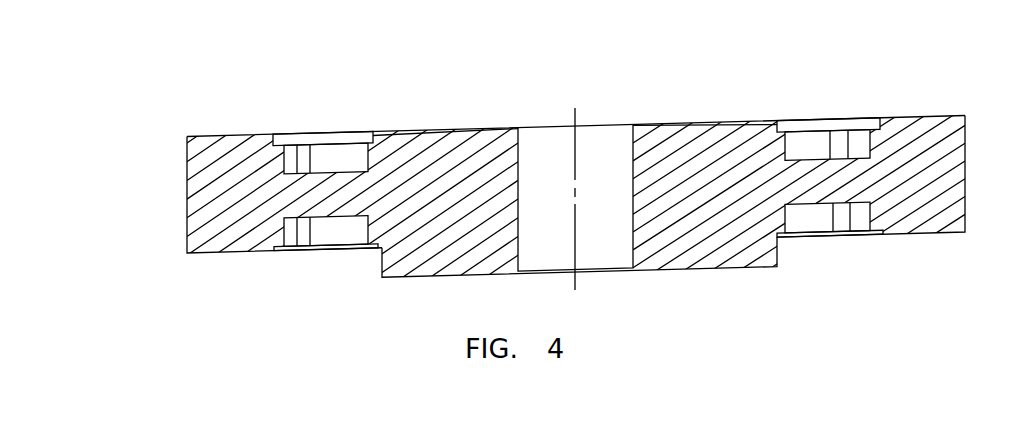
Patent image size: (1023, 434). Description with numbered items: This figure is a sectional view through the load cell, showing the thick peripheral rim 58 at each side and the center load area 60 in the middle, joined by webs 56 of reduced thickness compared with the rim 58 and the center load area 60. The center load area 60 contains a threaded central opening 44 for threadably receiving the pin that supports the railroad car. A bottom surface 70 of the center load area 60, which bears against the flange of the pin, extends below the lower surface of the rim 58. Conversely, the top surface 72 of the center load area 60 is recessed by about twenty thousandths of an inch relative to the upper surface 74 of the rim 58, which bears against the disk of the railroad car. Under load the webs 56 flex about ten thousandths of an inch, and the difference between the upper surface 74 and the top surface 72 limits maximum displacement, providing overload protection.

The threaded central opening 44 is at (633, 142).
The webs 56 is at (327, 173).
The rim 58 is at (906, 117).
The center load area 60 is at (420, 132).
The bottom surface 70 is at (748, 267).
The top surface 72 is at (691, 128).
The upper surface 74 is at (214, 135).